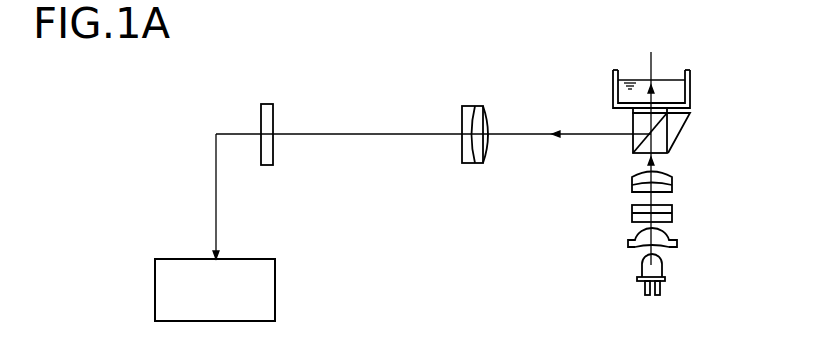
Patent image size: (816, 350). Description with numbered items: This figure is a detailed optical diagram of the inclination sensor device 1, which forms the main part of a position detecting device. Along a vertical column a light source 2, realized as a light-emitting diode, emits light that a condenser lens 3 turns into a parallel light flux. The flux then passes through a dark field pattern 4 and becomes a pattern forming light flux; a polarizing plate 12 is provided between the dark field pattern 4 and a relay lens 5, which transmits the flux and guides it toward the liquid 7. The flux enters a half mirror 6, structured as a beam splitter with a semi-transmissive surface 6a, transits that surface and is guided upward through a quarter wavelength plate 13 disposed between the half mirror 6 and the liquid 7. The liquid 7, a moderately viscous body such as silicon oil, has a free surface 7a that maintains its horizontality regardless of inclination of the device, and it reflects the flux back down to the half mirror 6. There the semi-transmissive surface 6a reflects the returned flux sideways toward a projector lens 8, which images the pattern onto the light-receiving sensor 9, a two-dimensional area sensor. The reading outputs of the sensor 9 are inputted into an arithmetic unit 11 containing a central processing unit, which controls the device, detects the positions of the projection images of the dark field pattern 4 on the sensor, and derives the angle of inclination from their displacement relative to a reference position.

The inclination sensor device 1 is at (658, 228).
The light source 2 is at (662, 270).
The condenser lens 3 is at (677, 242).
The dark field pattern 4 is at (672, 215).
The relay lens 5 is at (672, 178).
The half mirror 6 is at (661, 133).
The semi-transmissive surface 6a is at (634, 146).
The liquid 7 is at (654, 56).
The free surface 7a is at (674, 80).
The projector lens 8 is at (482, 106).
The light-receiving sensor 9 is at (264, 104).
The arithmetic unit 11 is at (268, 299).
The polarizing plate 12 is at (632, 212).
The quarter wavelength plate 13 is at (633, 110).